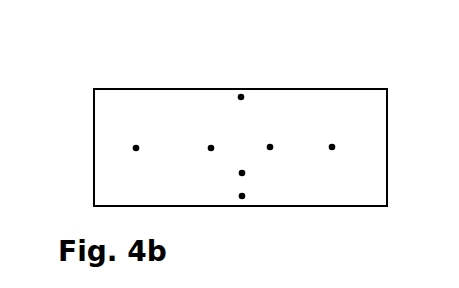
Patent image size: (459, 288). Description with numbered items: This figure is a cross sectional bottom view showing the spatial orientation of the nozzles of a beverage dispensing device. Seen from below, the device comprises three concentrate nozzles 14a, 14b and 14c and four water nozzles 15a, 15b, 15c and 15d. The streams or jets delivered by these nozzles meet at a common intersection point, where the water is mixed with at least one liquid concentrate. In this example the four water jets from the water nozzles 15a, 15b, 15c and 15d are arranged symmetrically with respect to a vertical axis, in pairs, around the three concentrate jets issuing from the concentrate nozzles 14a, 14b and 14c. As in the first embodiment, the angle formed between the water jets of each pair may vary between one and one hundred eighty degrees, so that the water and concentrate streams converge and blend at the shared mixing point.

The concentrate nozzle 14a is at (207, 147).
The concentrate nozzle 14b is at (273, 146).
The concentrate nozzle 14c is at (239, 173).
The water nozzle 15a is at (130, 150).
The water nozzle 15b is at (336, 148).
The water nozzle 15c is at (244, 95).
The water nozzle 15d is at (243, 199).